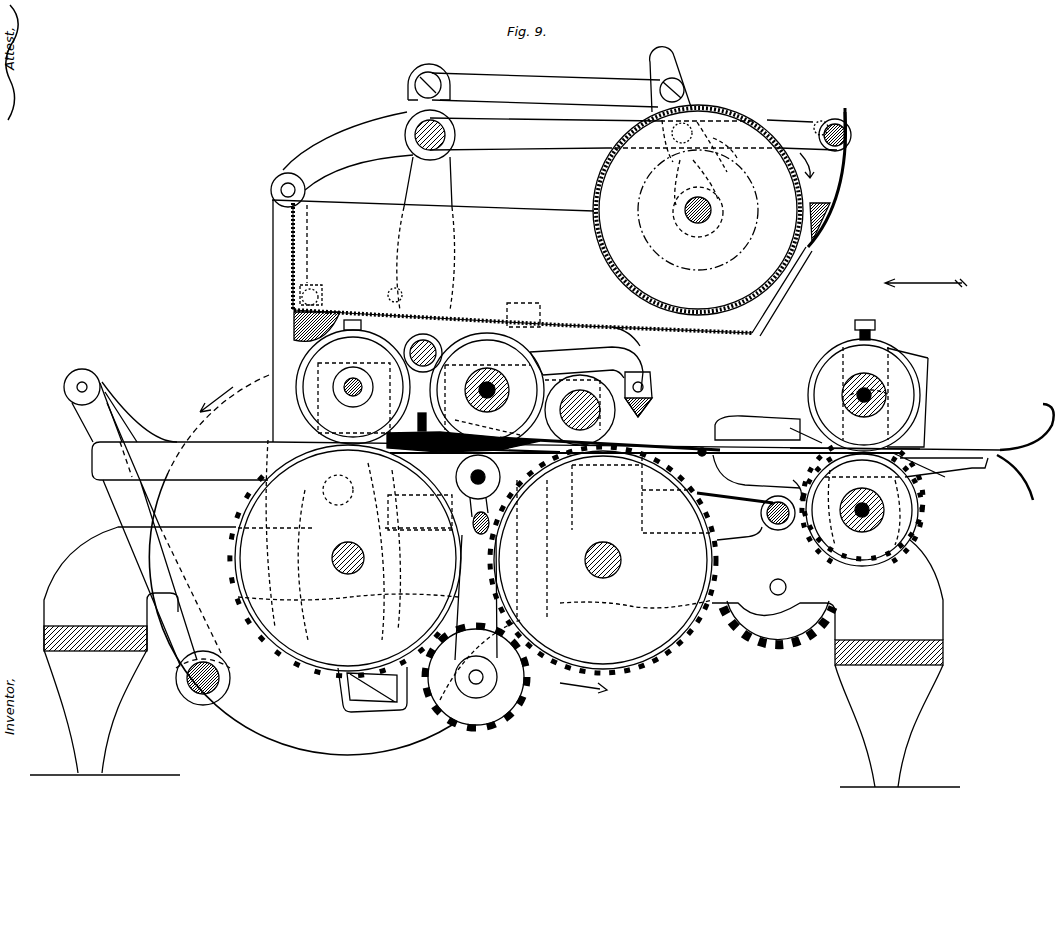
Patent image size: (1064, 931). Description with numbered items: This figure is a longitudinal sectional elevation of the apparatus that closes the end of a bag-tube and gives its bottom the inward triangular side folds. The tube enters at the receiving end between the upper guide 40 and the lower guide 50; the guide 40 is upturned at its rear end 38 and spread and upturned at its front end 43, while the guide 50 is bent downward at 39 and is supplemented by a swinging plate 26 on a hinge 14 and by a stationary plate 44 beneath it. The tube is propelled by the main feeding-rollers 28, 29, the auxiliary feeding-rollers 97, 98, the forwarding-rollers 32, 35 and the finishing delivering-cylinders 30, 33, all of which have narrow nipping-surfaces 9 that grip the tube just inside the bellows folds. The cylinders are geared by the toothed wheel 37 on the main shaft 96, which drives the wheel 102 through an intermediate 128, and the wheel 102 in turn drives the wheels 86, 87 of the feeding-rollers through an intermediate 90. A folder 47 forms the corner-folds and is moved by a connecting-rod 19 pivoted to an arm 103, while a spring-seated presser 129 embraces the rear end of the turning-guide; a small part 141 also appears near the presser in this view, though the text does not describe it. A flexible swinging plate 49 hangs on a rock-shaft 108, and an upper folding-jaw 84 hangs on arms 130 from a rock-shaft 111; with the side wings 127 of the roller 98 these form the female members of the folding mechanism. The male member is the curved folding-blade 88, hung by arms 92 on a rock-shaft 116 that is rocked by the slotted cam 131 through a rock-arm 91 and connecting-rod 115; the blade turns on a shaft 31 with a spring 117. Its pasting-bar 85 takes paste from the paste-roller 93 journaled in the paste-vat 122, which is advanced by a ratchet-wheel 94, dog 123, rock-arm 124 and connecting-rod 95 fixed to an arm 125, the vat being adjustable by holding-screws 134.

The nipping-surfaces 9 is at (445, 423).
The hinge 14 is at (707, 460).
The connecting-rod 19 is at (120, 405).
The swinging plate 26 is at (690, 449).
The main feeding-roller 28 is at (863, 449).
The main feeding-roller 29 is at (862, 510).
The finishing delivering-cylinder 30 is at (353, 382).
The shaft 31 is at (826, 156).
The forwarding-roller 32 is at (487, 390).
The finishing delivering-cylinder 33 is at (250, 508).
The forwarding-roller 35 is at (478, 488).
The toothed wheel 37 is at (291, 681).
The upturned rear end of guide 38 is at (1038, 415).
The downward-bent rear end of lower guide 39 is at (1015, 480).
The upper guide 40 is at (1012, 427).
The upturned front end of guide 43 is at (768, 429).
The stationary plate 44 is at (756, 471).
The folder 47 is at (610, 434).
The flexible swinging plate 49 is at (735, 493).
The lower guide 50 is at (946, 465).
The upper swinging folding-jaw 84 is at (652, 402).
The pasting-bar 85 is at (821, 215).
The toothed wheel 86 is at (888, 344).
The toothed wheel 87 is at (914, 486).
The curved folding-blade 88 is at (832, 200).
The intermediate 90 is at (770, 645).
The rock-arm 91 is at (342, 159).
The arms 92 is at (633, 134).
The paste-roller 93 is at (790, 220).
The ratchet-wheel 94 is at (698, 210).
The connecting-rod 95 is at (546, 90).
The main shaft 96 is at (365, 575).
The auxiliary feeding-roller 97 is at (580, 410).
The auxiliary feeding-roller 98 is at (635, 455).
The toothed wheel 102 is at (619, 684).
The arm 103 is at (162, 534).
The rock-shaft 108 is at (759, 511).
The rock-shaft 111 is at (414, 342).
The connecting-rod 115 is at (288, 321).
The rock-shaft 116 is at (446, 133).
The spring 117 is at (832, 125).
The paste-vat 122 is at (542, 270).
The dog 123 is at (725, 155).
The rock-arm 124 is at (693, 109).
The arm 125 is at (410, 104).
The side wings 127 is at (480, 456).
The intermediate 128 is at (486, 732).
The spring-seated presser 129 is at (463, 434).
The arms 130 is at (586, 361).
The slotted cam 131 is at (300, 565).
The holding-screws 134 is at (316, 287).
The stop 141 is at (430, 414).